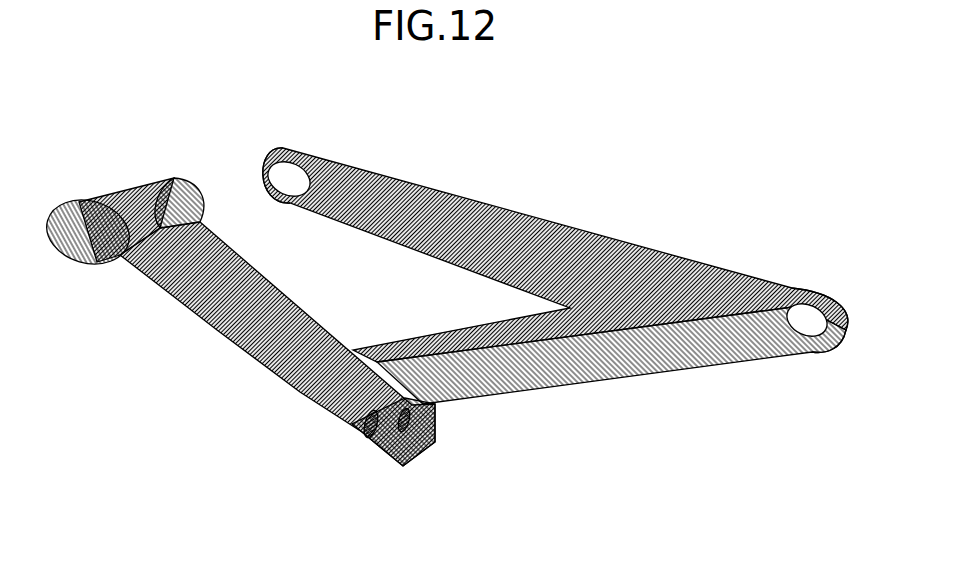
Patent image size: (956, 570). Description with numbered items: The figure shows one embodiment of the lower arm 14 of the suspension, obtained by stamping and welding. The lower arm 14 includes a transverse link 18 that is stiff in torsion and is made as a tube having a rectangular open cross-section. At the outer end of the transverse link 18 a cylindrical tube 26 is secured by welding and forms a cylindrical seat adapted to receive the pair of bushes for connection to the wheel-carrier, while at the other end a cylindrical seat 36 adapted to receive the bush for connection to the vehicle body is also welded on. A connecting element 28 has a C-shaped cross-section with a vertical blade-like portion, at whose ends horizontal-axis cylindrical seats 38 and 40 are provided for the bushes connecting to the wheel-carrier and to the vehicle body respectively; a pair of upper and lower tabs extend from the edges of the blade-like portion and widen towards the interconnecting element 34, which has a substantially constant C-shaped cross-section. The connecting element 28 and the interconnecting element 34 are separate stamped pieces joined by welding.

The lower arm 14 is at (443, 307).
The transverse link 18 is at (192, 292).
The cylindrical tube 26 is at (71, 200).
The connecting element 28 is at (572, 238).
The interconnecting element 34 is at (572, 367).
The cylindrical seat 36 is at (362, 432).
The cylindrical seat 38 is at (262, 178).
The cylindrical seat 40 is at (817, 343).